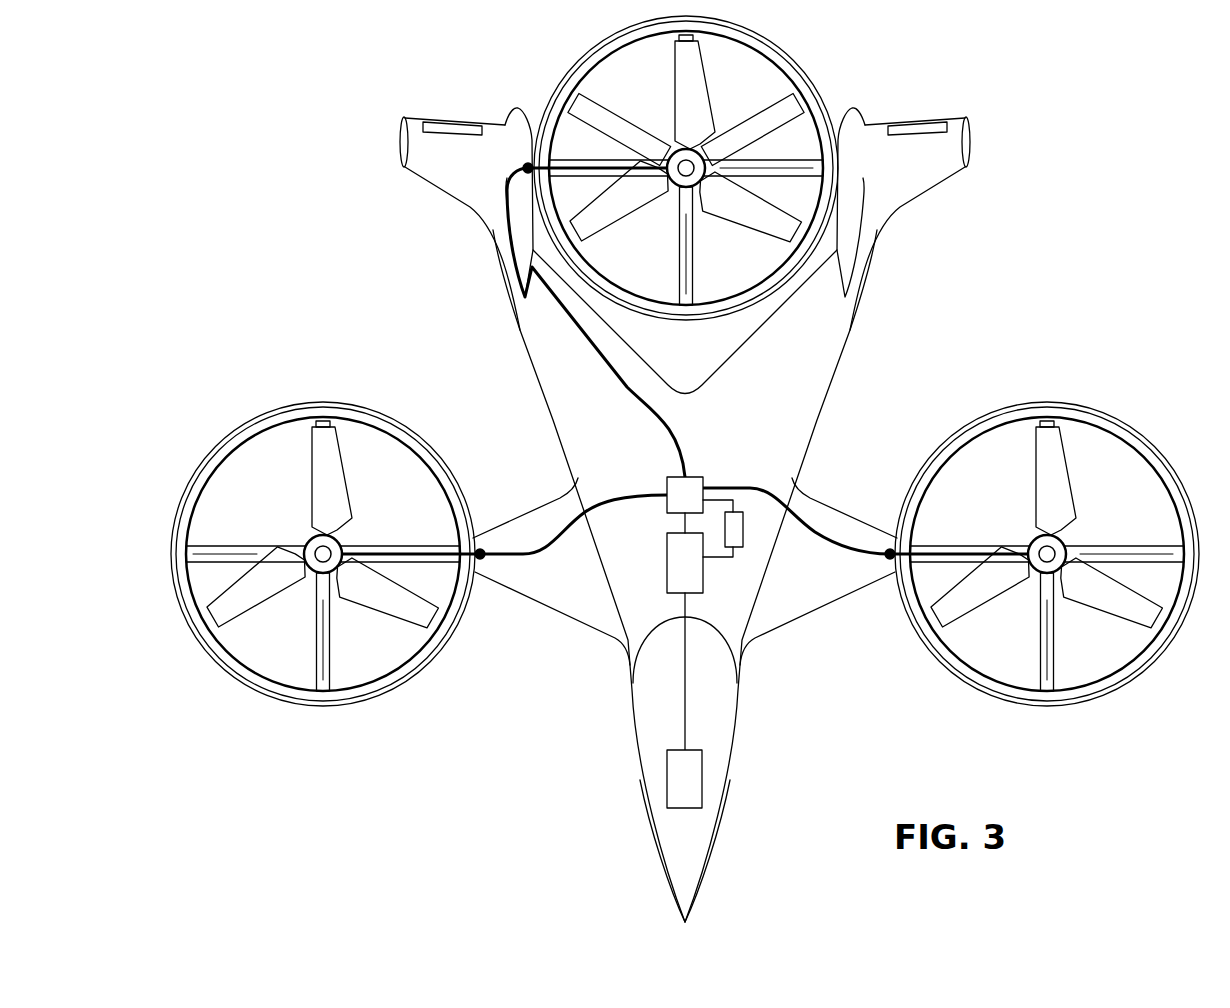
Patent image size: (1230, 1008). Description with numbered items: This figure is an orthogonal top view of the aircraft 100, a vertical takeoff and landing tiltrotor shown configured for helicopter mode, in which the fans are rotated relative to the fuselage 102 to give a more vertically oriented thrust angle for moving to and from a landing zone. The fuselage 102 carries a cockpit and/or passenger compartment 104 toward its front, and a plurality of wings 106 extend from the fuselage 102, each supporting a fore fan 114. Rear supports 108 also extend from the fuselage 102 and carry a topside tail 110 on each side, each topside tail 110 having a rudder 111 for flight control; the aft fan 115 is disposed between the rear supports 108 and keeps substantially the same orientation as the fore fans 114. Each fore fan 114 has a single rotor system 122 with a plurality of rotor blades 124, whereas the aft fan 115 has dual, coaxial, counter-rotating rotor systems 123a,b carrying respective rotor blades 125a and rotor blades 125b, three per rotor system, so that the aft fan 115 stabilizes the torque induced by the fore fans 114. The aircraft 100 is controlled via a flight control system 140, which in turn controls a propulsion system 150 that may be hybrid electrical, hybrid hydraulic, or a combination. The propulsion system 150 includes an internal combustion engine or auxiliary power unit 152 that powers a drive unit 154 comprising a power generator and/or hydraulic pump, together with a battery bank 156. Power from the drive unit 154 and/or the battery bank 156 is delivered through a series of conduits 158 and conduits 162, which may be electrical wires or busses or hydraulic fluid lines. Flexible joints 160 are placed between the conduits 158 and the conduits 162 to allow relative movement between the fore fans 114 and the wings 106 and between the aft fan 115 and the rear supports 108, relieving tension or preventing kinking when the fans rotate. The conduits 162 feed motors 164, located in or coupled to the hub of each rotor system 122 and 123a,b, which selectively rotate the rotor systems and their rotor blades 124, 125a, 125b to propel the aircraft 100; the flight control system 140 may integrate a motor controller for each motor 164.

The aircraft 100 is at (246, 150).
The fuselage 102 is at (742, 678).
The cockpit and/or passenger compartment 104 is at (653, 843).
The wings 106 is at (548, 615).
The rear supports 108 is at (497, 270).
The topside tail 110 is at (400, 140).
The rudder 111 is at (445, 120).
The fore fans 114 is at (266, 695).
The aft fan 115 is at (577, 58).
The rotor system 122 is at (320, 580).
The dual coaxial counter-rotating rotor systems 123a,b is at (676, 190).
The rotor blades 124 is at (365, 615).
The rotor blades 125a is at (750, 225).
The rotor blades 125b is at (625, 118).
The flight control system 140 is at (667, 778).
The propulsion system 150 is at (661, 542).
The internal combustion engine and/or auxiliary power unit (APU) 152 is at (667, 563).
The drive unit 154 is at (693, 475).
The battery bank 156 is at (743, 528).
The conduits 158 is at (622, 383).
The flexible joints 160 is at (526, 167).
The conduits 162 is at (568, 162).
The motors 164 is at (696, 150).